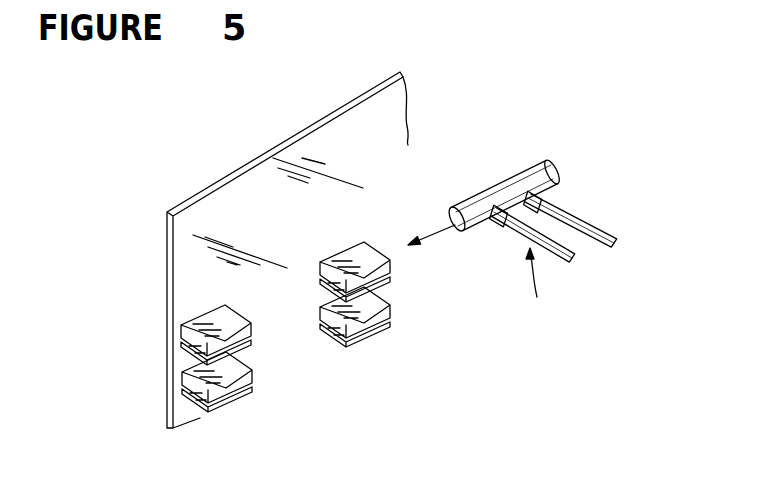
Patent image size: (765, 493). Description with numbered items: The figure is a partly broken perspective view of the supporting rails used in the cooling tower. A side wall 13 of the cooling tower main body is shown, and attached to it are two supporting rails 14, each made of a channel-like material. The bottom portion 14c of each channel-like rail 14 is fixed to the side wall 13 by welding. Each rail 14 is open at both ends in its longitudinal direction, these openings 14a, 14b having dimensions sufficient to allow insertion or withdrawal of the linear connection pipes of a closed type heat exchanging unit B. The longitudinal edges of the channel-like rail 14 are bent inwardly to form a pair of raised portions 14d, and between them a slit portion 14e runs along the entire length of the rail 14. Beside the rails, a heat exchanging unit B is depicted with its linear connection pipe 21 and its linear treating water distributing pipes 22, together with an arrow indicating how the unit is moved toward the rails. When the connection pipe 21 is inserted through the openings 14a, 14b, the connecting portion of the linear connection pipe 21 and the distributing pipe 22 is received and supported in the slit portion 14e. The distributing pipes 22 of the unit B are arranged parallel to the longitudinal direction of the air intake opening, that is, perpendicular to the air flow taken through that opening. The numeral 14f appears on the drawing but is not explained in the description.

The side wall 13 is at (168, 244).
The supporting rail 14 is at (273, 367).
The opening 14a is at (186, 385).
The opening 14b is at (368, 252).
The bottom portion 14c is at (183, 331).
The raised portions 14d is at (248, 365).
The slit portion 14e is at (222, 408).
The top surface of terminal block 14f is at (201, 318).
The linear connection pipe 21 is at (492, 197).
The treating water distributing pipe 22 is at (537, 231).
The closed type heat exchanging unit B is at (535, 285).